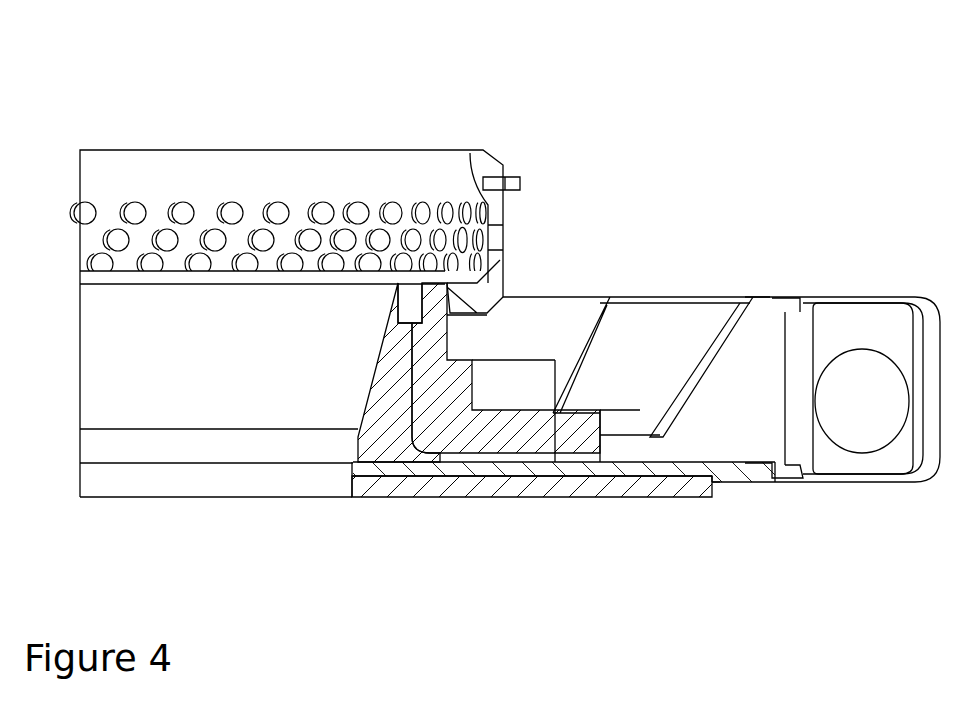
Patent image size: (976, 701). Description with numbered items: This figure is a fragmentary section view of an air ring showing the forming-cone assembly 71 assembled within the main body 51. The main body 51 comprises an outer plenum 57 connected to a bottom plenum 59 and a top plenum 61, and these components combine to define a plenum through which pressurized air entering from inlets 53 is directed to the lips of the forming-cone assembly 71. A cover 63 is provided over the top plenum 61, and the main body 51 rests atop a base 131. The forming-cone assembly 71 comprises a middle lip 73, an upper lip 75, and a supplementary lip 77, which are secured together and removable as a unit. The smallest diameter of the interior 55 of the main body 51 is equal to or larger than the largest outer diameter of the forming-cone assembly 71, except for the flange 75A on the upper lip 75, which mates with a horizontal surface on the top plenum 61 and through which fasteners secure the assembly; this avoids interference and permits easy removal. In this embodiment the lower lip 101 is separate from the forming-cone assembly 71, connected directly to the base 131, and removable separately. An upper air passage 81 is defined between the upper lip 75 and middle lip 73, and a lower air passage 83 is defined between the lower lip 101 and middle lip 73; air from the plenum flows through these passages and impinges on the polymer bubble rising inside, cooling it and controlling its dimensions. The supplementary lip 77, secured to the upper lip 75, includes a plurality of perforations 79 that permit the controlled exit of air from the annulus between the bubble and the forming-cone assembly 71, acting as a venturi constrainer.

The main body 51 is at (826, 527).
The inlets 53 is at (862, 401).
The interior 55 is at (533, 320).
The outer plenum 57 is at (860, 294).
The bottom plenum 59 is at (740, 470).
The top plenum 61 is at (707, 343).
The cover 63 is at (605, 303).
The forming-cone assembly 71 is at (236, 102).
The middle lip 73 is at (385, 390).
The upper lip 75 is at (472, 430).
The flange 75A is at (552, 410).
The supplementary lip 77 is at (503, 150).
The perforations 79 is at (423, 212).
The upper air passage 81 is at (406, 285).
The lower air passage 83 is at (353, 463).
The lower lip 101 is at (363, 488).
The base 131 is at (608, 486).